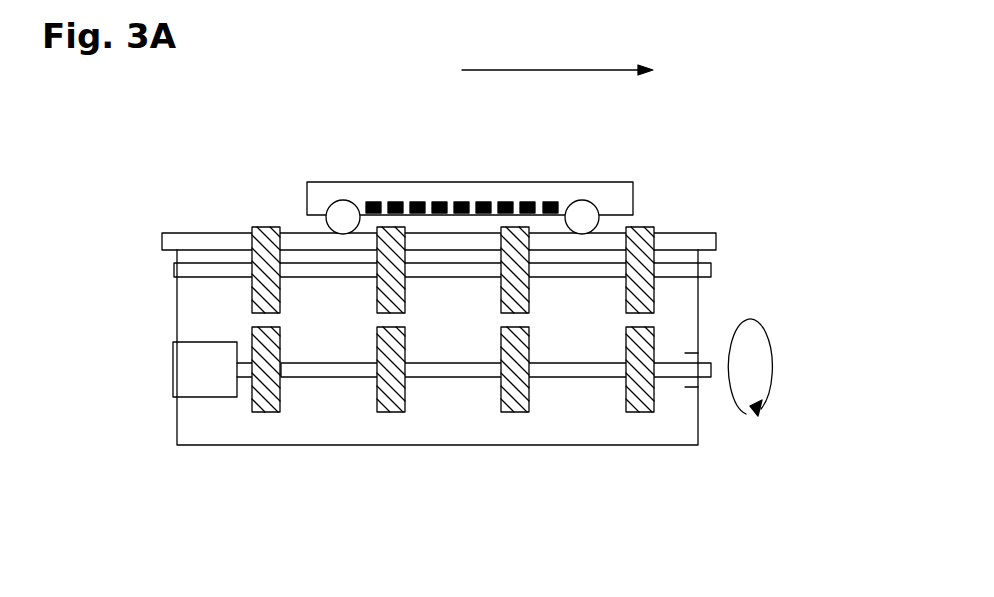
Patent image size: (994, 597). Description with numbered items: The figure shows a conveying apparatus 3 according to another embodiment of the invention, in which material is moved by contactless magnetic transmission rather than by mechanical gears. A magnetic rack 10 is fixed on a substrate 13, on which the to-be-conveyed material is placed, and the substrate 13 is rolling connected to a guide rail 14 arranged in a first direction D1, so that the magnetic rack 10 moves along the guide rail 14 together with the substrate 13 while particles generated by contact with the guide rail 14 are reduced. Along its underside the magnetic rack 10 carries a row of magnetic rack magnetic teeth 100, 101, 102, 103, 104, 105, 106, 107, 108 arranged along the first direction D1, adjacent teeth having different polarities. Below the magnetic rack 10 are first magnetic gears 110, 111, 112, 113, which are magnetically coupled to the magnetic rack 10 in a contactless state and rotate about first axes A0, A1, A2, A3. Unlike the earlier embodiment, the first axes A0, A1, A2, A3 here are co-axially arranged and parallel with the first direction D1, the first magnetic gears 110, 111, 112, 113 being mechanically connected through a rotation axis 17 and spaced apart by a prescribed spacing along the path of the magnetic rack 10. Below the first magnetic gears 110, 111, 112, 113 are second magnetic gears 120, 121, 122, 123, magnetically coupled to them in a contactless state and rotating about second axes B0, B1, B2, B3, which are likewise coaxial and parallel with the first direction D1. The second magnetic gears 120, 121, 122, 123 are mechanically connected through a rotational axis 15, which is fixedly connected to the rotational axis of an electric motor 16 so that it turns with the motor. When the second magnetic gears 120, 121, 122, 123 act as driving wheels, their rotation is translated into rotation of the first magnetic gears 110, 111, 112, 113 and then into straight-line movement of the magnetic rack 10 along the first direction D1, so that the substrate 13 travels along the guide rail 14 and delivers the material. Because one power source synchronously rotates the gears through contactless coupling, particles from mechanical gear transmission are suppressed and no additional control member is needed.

The conveying apparatus 3 is at (753, 79).
The first direction D1 is at (557, 58).
The magnetic rack 10 is at (566, 202).
The substrate 13 is at (313, 198).
The guide rail 14 is at (702, 242).
The rotational axis 15 is at (703, 377).
The electric motor 16 is at (187, 372).
The rotation axis 17 is at (702, 270).
The magnetic rack magnetic tooth 100 is at (373, 202).
The magnetic rack magnetic tooth 101 is at (395, 202).
The magnetic rack magnetic tooth 102 is at (420, 202).
The magnetic rack magnetic tooth 103 is at (440, 202).
The magnetic rack magnetic tooth 104 is at (462, 202).
The magnetic rack magnetic tooth 105 is at (483, 202).
The magnetic rack magnetic tooth 106 is at (505, 202).
The magnetic rack magnetic tooth 107 is at (527, 202).
The magnetic rack magnetic tooth 108 is at (550, 202).
The first magnetic gear 110 is at (260, 295).
The first magnetic gear 111 is at (395, 288).
The first magnetic gear 112 is at (520, 288).
The first magnetic gear 113 is at (643, 295).
The second magnetic gear 120 is at (267, 413).
The second magnetic gear 121 is at (393, 413).
The second magnetic gear 122 is at (522, 413).
The second magnetic gear 123 is at (635, 413).
The first axis A0 is at (253, 267).
The first axis A1 is at (377, 270).
The first axis A2 is at (501, 270).
The first axis A3 is at (626, 270).
The second axis B0 is at (281, 370).
The second axis B1 is at (405, 375).
The second axis B2 is at (529, 375).
The second axis B3 is at (655, 375).